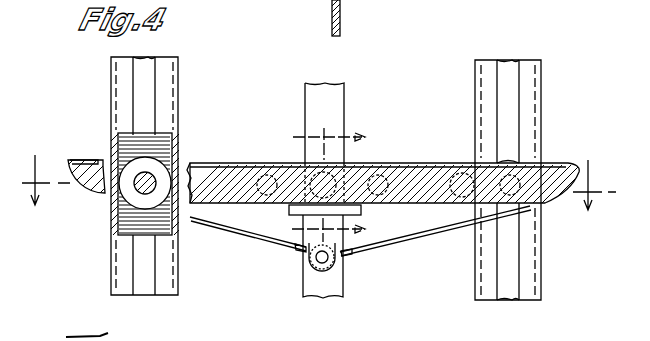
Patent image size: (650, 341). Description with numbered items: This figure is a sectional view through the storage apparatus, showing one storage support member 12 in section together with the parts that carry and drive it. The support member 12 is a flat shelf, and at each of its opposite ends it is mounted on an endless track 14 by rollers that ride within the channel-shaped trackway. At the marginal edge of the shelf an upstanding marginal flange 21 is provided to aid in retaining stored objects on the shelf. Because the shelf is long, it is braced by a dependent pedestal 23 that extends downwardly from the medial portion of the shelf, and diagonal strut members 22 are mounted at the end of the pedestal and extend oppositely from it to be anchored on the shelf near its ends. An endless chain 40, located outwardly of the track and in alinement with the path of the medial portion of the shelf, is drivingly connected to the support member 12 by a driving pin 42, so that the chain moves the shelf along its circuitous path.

The storage support member 12 is at (103, 193).
The endless track 14 is at (107, 93).
The marginal flange 21 is at (72, 160).
The diagonal strut member 22 is at (246, 230).
The dependent pedestal 23 is at (308, 250).
The endless chain 40 is at (306, 118).
The driving pin 42 is at (340, 168).